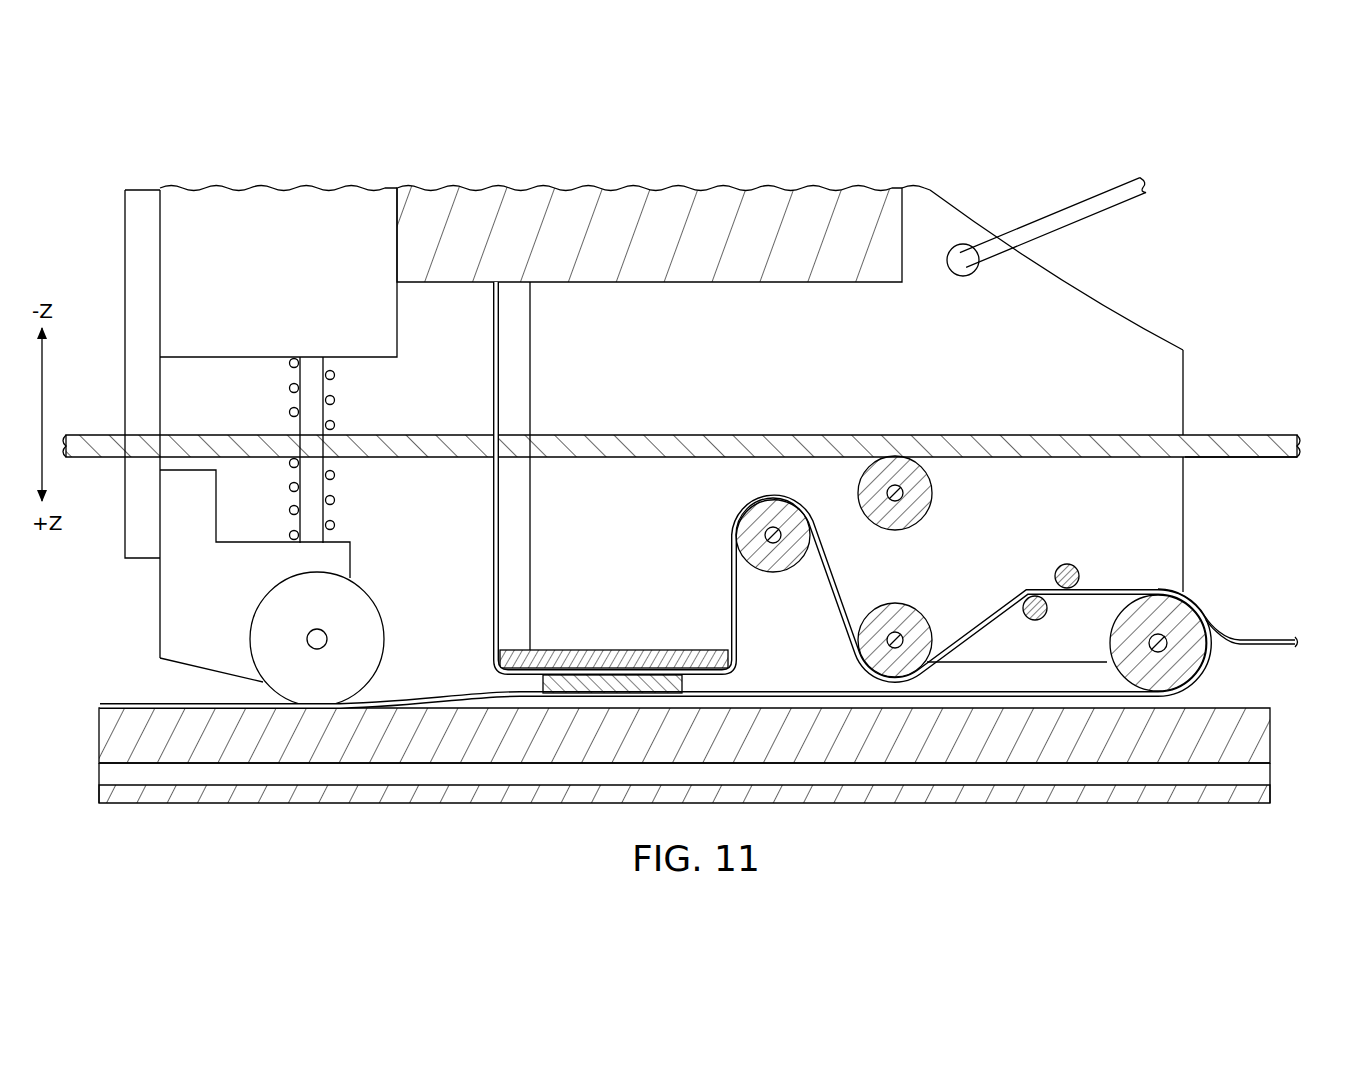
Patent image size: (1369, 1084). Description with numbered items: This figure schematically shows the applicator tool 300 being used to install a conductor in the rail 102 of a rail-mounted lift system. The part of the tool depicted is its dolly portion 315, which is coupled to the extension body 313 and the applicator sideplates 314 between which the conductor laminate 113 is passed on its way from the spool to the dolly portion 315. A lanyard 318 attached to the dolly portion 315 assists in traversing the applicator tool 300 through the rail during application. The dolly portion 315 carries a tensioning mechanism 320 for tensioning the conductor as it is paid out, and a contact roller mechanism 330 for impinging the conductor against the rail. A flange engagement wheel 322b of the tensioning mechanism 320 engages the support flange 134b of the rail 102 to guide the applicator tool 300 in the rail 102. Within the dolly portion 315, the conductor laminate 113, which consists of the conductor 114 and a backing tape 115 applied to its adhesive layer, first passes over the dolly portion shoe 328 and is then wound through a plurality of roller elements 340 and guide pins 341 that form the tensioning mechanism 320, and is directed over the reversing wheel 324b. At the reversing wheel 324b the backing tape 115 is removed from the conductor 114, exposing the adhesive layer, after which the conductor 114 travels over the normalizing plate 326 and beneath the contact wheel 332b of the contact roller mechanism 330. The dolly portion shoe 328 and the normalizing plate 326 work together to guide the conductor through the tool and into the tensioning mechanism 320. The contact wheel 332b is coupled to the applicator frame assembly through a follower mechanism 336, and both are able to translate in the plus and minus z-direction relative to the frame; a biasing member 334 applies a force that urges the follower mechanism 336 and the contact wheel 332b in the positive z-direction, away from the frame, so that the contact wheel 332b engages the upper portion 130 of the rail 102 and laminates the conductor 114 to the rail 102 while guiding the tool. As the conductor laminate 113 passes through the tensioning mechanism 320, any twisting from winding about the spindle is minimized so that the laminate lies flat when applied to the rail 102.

The rail 102 is at (1309, 432).
The conductor laminate 113 is at (1208, 601).
The conductor 114 is at (1212, 649).
The backing tape 115 is at (1268, 637).
The upper portion of the rail 130 is at (1252, 712).
The support flange 134b is at (1237, 459).
The applicator tool 300 is at (1176, 325).
The extension body 313 is at (165, 275).
The applicator sideplates 314 is at (820, 283).
The dolly portion 315 is at (1185, 386).
The lanyard 318 is at (1050, 216).
The tensioning mechanism 320 is at (1192, 553).
The flange engagement wheel 322b is at (932, 494).
The reversing wheel 324b is at (1206, 672).
The normalizing plate 326 is at (682, 688).
The dolly portion shoe 328 is at (613, 650).
The contact roller mechanism 330 is at (370, 545).
The contact wheel 332b is at (385, 616).
The biasing member 334 is at (335, 377).
The follower mechanism 336 is at (160, 612).
The roller elements 340 is at (773, 573).
The guide pins 341 is at (1072, 562).